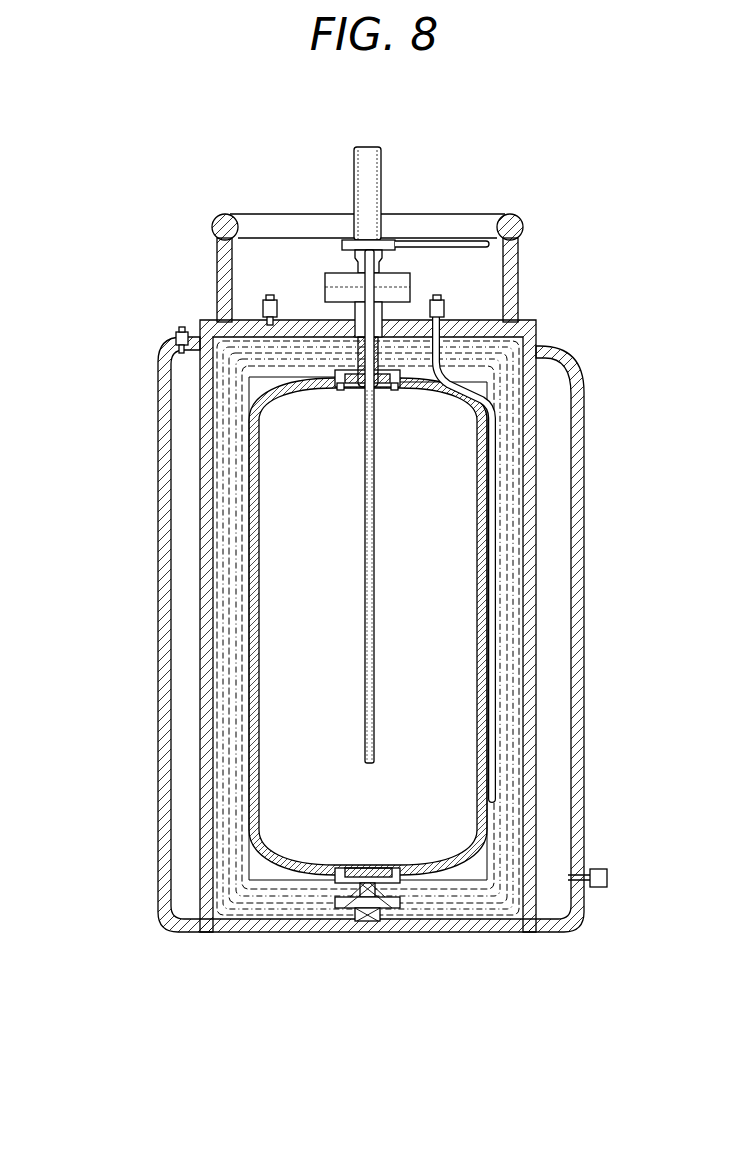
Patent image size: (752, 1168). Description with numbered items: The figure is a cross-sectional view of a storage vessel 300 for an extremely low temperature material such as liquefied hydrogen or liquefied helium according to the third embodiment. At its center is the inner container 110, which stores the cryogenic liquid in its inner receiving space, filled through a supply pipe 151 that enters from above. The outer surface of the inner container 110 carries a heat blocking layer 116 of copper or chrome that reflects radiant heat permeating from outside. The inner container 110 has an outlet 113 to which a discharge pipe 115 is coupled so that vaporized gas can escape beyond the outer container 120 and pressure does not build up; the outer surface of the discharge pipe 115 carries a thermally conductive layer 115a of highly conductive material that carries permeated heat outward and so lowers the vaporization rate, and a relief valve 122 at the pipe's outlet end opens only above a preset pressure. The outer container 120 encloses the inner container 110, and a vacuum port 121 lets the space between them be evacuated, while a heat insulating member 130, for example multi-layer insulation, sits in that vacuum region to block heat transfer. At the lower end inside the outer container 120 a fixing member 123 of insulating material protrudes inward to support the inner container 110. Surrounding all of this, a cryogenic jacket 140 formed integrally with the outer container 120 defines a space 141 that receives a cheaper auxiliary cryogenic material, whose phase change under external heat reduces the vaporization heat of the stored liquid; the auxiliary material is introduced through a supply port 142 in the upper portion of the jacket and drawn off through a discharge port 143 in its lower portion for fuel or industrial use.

The storage vessel 300 is at (385, 104).
The inner container 110 is at (256, 722).
The outlet 113 is at (490, 813).
The discharge pipe 115 is at (493, 648).
The thermally conductive layer 115a is at (492, 425).
The heat blocking layer 116 is at (252, 632).
The outer container 120 is at (205, 567).
The vacuum port 121 is at (263, 310).
The relief valve 122 is at (445, 310).
The fixing member 123 is at (372, 912).
The heat insulating member 130 is at (224, 538).
The cryogenic jacket 140 is at (164, 515).
The space 141 is at (184, 461).
The supply port 142 is at (176, 341).
The discharge port 143 is at (594, 872).
The supply pipe 151 is at (365, 182).